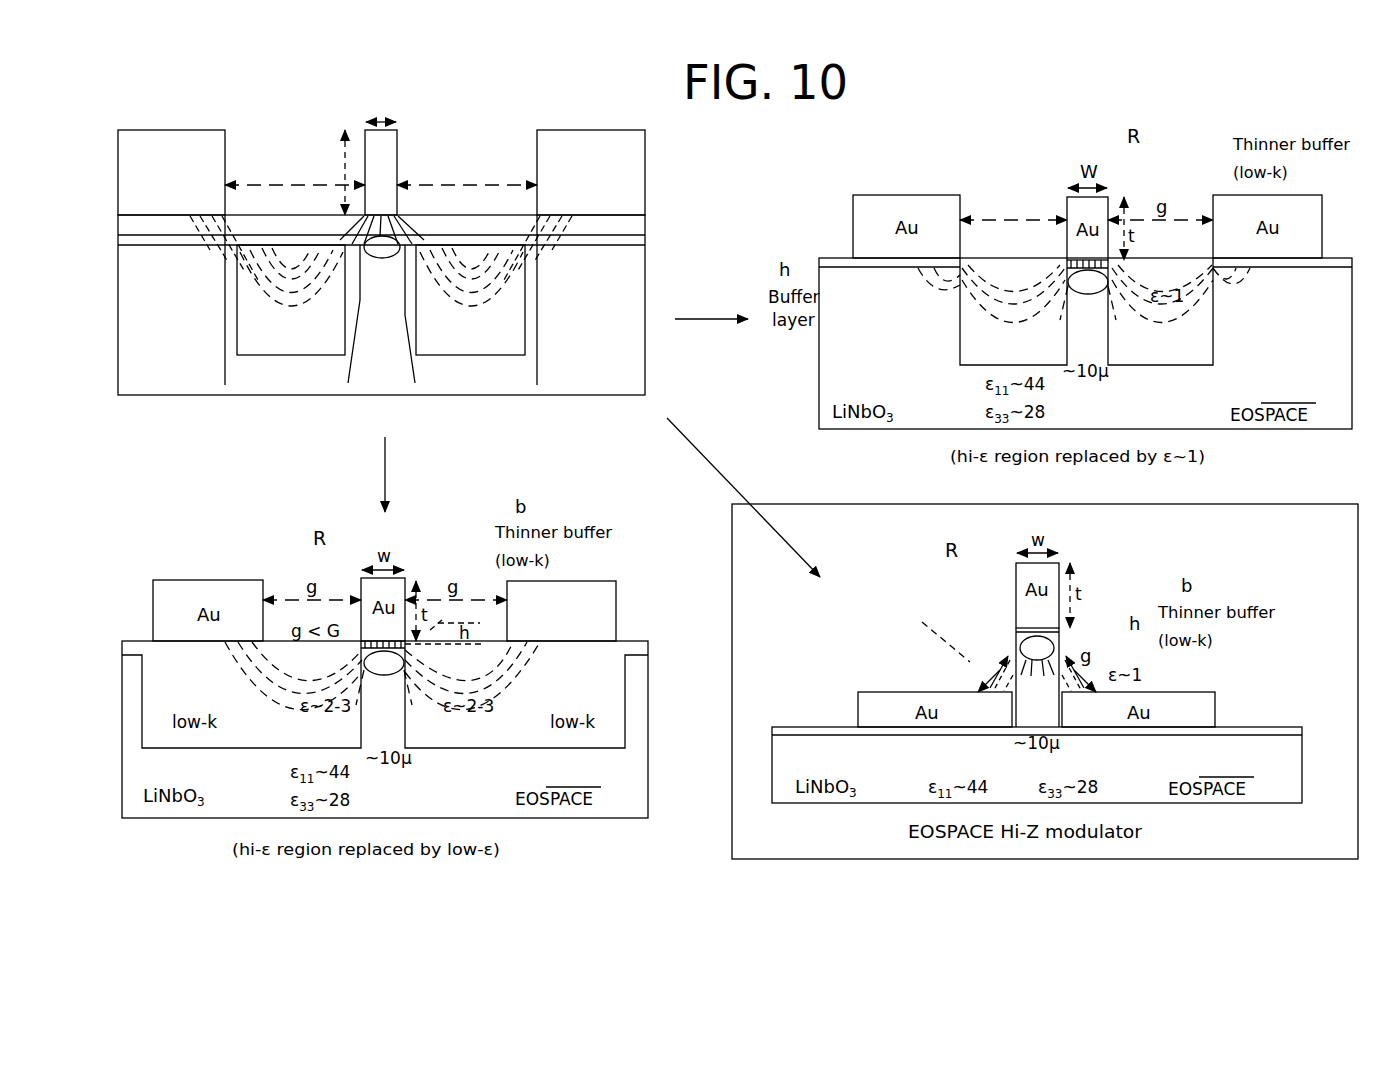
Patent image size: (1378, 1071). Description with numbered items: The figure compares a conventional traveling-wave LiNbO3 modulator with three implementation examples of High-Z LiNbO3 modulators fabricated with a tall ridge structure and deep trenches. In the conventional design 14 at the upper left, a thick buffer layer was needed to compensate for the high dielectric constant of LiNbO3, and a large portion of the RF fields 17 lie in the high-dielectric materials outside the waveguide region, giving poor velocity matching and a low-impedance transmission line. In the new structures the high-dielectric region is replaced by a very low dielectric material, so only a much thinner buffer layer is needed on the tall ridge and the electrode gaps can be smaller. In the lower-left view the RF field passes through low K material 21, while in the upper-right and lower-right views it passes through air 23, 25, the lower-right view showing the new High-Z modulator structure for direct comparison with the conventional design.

The conventional design 14 is at (645, 168).
The RF fields 17 is at (415, 261).
The low K material 21 is at (616, 610).
The air 23 is at (984, 212).
The air 25 is at (920, 670).